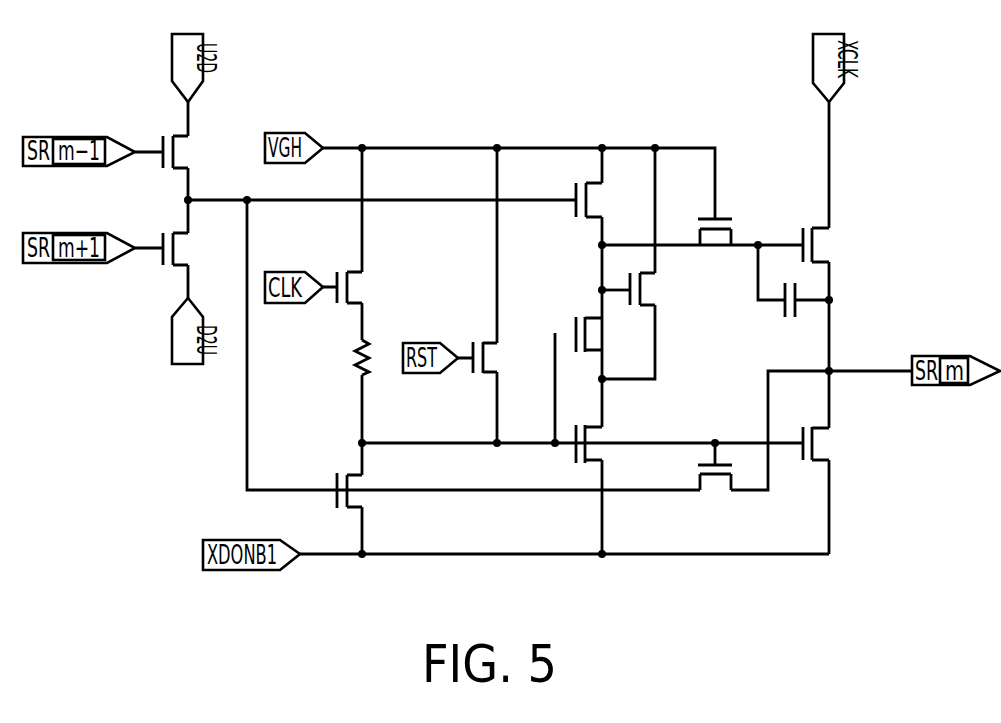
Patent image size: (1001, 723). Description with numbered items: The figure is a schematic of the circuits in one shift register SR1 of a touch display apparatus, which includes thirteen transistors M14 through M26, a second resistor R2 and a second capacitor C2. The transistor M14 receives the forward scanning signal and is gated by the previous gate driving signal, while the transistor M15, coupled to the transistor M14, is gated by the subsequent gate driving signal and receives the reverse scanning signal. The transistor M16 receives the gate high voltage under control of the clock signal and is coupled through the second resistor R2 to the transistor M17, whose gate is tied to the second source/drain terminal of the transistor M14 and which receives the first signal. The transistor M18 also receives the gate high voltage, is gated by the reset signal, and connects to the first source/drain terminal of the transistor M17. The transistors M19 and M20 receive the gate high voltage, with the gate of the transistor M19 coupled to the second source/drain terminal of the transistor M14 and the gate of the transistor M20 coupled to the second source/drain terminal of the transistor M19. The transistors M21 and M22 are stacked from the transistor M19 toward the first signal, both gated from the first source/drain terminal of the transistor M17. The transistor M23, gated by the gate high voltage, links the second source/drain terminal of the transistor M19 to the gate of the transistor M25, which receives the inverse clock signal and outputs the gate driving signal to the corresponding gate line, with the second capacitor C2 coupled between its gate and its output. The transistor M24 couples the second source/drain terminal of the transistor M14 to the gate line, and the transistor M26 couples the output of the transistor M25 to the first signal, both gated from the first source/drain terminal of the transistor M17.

The transistor M14 is at (196, 153).
The transistor M15 is at (196, 248).
The transistor M16 is at (371, 287).
The transistor M17 is at (373, 482).
The transistor M18 is at (506, 357).
The transistor M19 is at (610, 201).
The transistor M20 is at (663, 289).
The transistor M21 is at (608, 333).
The transistor M22 is at (612, 435).
The transistor M23 is at (718, 249).
The transistor M24 is at (718, 494).
The transistor M25 is at (837, 246).
The transistor M26 is at (839, 444).
The second resistor R2 is at (342, 359).
The second capacitor C2 is at (791, 318).
The shift register SR1 is at (953, 572).